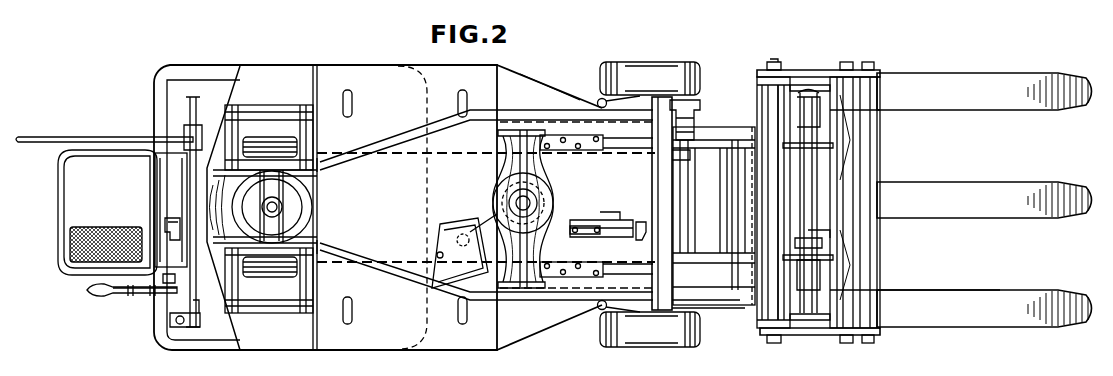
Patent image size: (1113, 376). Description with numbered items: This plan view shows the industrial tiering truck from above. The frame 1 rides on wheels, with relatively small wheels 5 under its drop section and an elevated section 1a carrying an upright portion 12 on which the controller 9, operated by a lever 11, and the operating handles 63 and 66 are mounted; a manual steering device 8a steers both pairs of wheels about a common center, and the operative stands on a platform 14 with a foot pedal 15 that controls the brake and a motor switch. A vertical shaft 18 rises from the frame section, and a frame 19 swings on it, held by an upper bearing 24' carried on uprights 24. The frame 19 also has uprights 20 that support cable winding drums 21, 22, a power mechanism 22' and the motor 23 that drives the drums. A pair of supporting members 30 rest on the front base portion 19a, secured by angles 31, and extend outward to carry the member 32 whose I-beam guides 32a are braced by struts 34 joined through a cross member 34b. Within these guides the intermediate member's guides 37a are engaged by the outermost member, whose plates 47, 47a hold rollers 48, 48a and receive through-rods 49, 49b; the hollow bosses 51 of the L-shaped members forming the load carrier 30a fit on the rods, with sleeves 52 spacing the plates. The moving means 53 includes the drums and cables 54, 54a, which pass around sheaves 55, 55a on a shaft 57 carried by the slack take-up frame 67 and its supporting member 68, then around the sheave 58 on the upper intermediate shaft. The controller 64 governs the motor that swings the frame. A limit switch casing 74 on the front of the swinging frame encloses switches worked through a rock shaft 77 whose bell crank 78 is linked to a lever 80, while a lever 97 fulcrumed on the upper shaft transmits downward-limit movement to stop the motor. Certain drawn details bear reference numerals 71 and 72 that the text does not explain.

The frame 1 is at (226, 66).
The elevated section 1a is at (203, 349).
The relatively small wheels 5 is at (610, 346).
The manual steering device 8a is at (50, 136).
The controller 9 is at (160, 190).
The lever 11 is at (90, 292).
The upright portion 12 is at (192, 104).
The platform 14 is at (57, 196).
The foot pedal 15 is at (108, 227).
The vertical shaft 18 is at (548, 172).
The frame 19 is at (368, 360).
The front base portion 19a is at (547, 98).
The uprights 20 is at (314, 242).
The cable winding drum 21 is at (313, 273).
The cable winding drum 22 is at (290, 140).
The power mechanism 22' is at (269, 127).
The motor 23 is at (305, 210).
The uprights 24 is at (575, 208).
The upper bearing 24' is at (539, 203).
The supporting members 30 is at (620, 268).
The load engaging and lifting device or carrier 30a is at (940, 284).
The angles 31 is at (600, 270).
The member 32 is at (712, 108).
The guides 32a is at (752, 312).
The struts 34 is at (402, 280).
The cross member 34b is at (654, 190).
The guides 37a is at (790, 338).
The plates 47 is at (812, 336).
The plates 47a is at (878, 272).
The rollers 48 is at (770, 64).
The rollers 48a is at (852, 316).
The through-rod 49 is at (868, 345).
The through-rod 49b is at (845, 345).
The hollow bosses 51 is at (878, 204).
The sleeves 52 is at (878, 254).
The moving means 53 is at (407, 139).
The cable 54 is at (418, 264).
The cable 54a is at (438, 154).
The sheave 55 is at (720, 253).
The sheave 55a is at (720, 158).
The shaft 57 is at (726, 222).
The sheave 58 is at (830, 258).
The operating handle 63 is at (162, 223).
The controller 64 is at (665, 165).
The operating handle 66 is at (158, 336).
The frame 67 is at (751, 216).
The supporting member 68 is at (768, 200).
The lift rod 71 is at (778, 180).
The hydraulic ram 72 is at (870, 314).
The casing 74 is at (626, 212).
The rock shaft 77 is at (626, 240).
The bell crank 78 is at (644, 243).
The lever 80 is at (732, 306).
The lever 97 is at (818, 230).